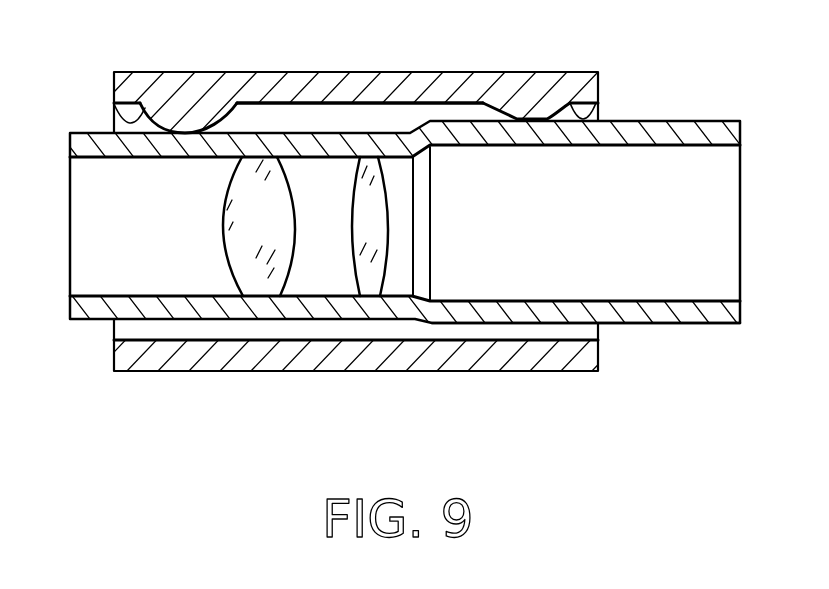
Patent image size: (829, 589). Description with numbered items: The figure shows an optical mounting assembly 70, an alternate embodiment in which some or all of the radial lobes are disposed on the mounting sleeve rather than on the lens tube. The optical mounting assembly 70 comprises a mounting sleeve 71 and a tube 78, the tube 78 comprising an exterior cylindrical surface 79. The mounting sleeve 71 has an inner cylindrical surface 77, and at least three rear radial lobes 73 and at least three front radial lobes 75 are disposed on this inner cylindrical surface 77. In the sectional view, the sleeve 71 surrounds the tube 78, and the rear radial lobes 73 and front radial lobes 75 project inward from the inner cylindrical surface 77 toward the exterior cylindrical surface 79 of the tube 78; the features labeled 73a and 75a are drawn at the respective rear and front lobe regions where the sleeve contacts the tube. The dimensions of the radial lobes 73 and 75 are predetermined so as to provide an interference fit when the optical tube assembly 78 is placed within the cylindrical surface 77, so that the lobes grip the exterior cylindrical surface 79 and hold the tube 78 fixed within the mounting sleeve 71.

The optical mounting assembly 70 is at (414, 227).
The mounting sleeve 71 is at (598, 72).
The rear radial lobes 73 is at (114, 106).
The left annular projection 73a is at (188, 72).
The front radial lobes 75 is at (598, 110).
The right annular projection 75a is at (519, 72).
The inner cylindrical surface 77 is at (350, 103).
The tube 78 is at (742, 124).
The exterior cylindrical surface 79 is at (668, 322).